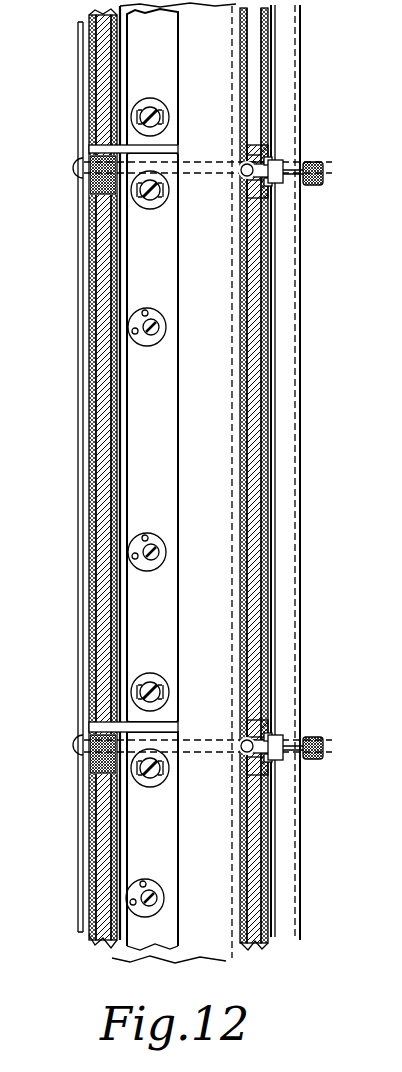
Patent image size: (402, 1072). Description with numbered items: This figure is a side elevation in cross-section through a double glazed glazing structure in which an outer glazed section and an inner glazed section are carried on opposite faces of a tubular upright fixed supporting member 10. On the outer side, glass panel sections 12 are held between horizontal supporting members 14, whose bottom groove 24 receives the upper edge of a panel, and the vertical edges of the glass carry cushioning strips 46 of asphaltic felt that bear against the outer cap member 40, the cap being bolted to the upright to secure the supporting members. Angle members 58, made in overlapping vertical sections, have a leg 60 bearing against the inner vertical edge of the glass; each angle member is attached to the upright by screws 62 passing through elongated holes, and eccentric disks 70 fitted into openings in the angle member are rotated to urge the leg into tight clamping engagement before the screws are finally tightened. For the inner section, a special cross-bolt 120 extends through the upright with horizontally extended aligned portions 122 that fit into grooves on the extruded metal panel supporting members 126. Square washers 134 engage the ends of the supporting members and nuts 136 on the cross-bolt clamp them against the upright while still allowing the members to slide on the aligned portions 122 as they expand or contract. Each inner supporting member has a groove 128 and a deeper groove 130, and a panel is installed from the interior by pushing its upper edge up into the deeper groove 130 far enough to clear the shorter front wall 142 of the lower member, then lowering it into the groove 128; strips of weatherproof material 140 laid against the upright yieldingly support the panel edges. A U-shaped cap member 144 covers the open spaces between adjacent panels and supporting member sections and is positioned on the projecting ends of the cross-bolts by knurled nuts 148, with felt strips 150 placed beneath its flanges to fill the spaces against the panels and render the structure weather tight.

The upright fixed supporting member 10 is at (245, 68).
The panel section 12 is at (100, 448).
The horizontal supporting member 14 is at (95, 194).
The bottom groove 24 is at (401, 846).
The cap member 40 is at (82, 290).
The cushioning strip 46 is at (100, 647).
The angle member 58 is at (175, 66).
The leg 60 is at (128, 418).
The screw 62 is at (160, 113).
The eccentric disk 70 is at (152, 340).
The cross-bolt 120 is at (196, 181).
The aligned portion 122 is at (243, 166).
The panel supporting member 126 is at (275, 185).
The groove 128 is at (255, 142).
The deeper groove 130 is at (262, 195).
The square washer 134 is at (268, 158).
The nut 136 is at (283, 166).
The weatherproof strip 140 is at (175, 300).
The shorter front wall 142 is at (262, 152).
The cap member 144 is at (300, 386).
The knurled nut 148 is at (323, 175).
The felt strip 150 is at (265, 312).